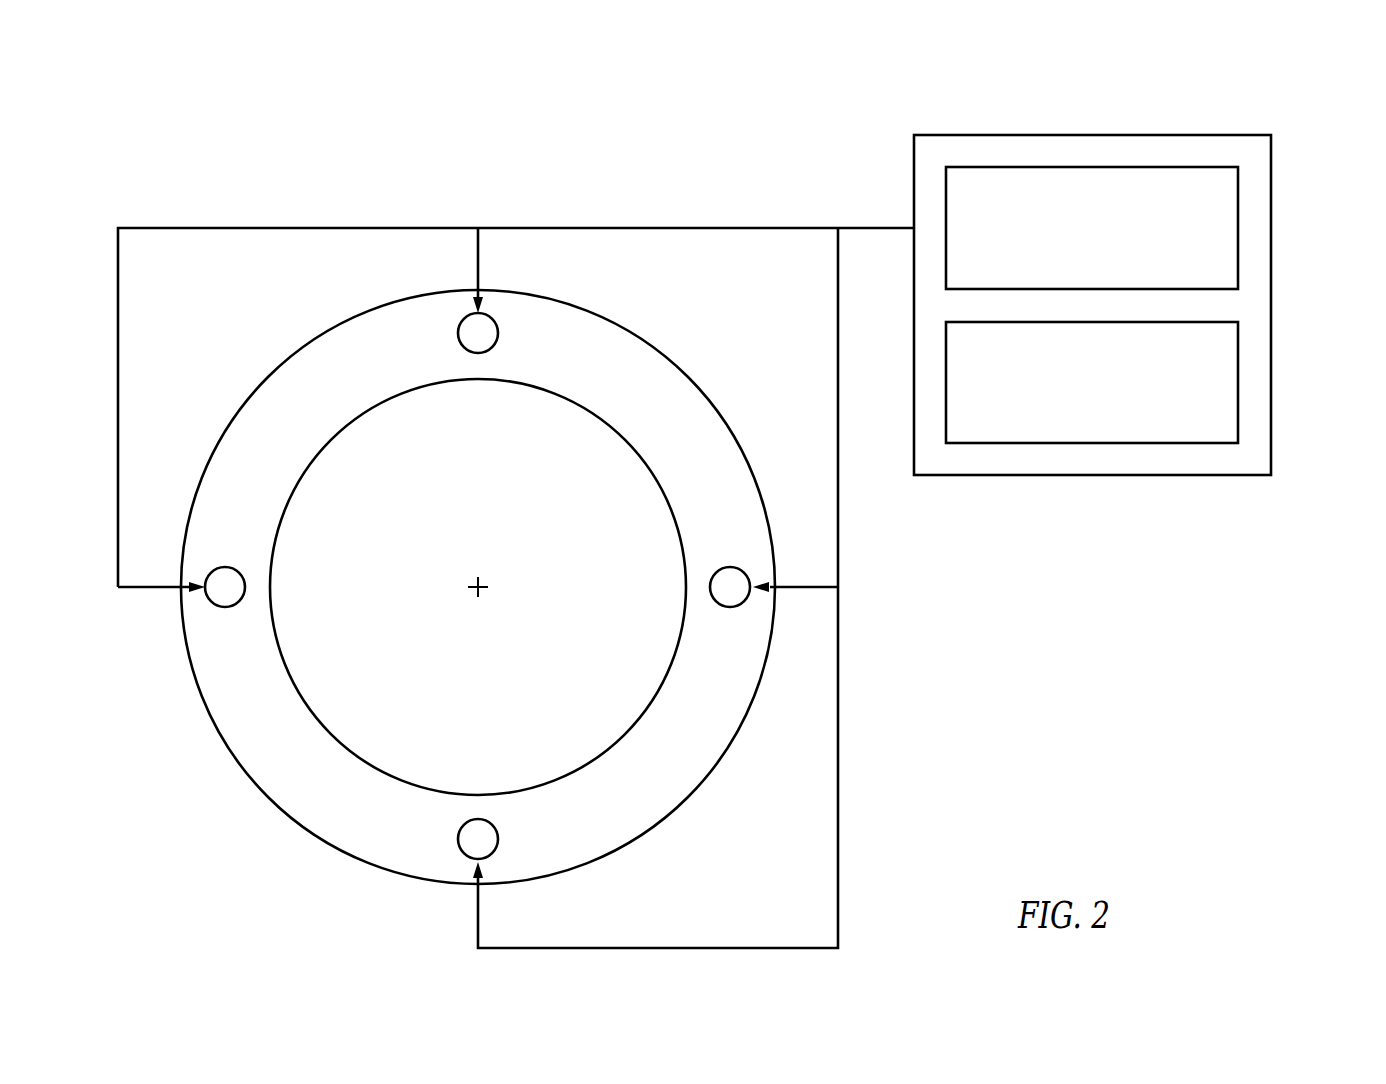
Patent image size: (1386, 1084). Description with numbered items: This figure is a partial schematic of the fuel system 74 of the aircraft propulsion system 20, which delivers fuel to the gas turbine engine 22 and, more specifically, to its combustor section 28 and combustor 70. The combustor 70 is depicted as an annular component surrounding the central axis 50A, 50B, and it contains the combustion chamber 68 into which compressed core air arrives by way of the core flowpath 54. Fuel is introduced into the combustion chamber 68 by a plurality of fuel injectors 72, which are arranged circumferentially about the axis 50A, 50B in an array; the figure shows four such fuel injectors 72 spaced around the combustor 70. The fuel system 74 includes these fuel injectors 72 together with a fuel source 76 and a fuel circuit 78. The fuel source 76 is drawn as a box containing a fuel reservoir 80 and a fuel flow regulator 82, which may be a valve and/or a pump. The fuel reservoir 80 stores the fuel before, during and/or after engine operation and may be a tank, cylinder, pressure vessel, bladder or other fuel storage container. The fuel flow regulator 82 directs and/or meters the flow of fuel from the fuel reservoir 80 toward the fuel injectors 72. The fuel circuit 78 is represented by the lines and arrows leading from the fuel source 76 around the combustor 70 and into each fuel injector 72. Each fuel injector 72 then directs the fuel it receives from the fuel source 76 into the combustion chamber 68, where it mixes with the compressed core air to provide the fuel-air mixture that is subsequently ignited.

The aircraft propulsion system 20 is at (140, 152).
The gas turbine engine 22 is at (744, 498).
The combustor section 28 is at (713, 336).
The axis 50A is at (480, 592).
The axis 50B is at (478, 587).
The core flowpath 54 is at (675, 405).
The combustion chamber 68 is at (478, 587).
The combustor 70 is at (625, 330).
The fuel injectors 72 is at (478, 353).
The fuel system 74 is at (1193, 113).
The fuel source 76 is at (1288, 175).
The fuel circuit 78 is at (794, 207).
The fuel reservoir 80 is at (1078, 413).
The fuel flow regulator 82 is at (1078, 260).